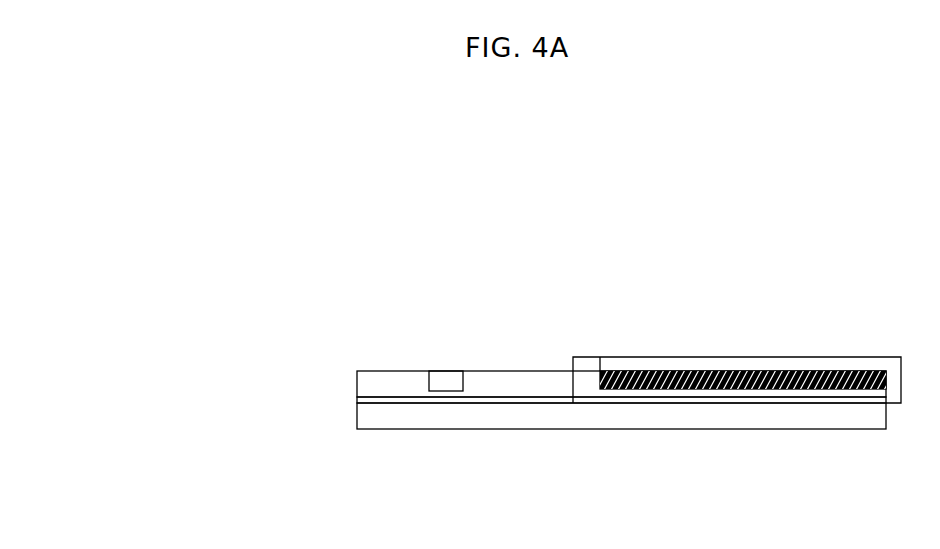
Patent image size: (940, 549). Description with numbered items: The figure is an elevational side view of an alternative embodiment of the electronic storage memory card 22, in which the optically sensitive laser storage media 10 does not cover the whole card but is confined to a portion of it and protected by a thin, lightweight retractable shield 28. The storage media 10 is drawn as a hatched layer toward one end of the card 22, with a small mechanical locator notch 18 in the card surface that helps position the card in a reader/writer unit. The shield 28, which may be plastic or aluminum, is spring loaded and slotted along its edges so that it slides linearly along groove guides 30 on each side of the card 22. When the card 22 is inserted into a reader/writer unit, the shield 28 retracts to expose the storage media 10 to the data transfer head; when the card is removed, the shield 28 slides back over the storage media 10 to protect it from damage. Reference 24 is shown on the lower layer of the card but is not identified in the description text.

The optically sensitive laser storage media 10 is at (748, 388).
The mechanical locator notch 18 is at (440, 380).
The electronic storage memory card 22 is at (300, 401).
The substrate lower layer 24 is at (405, 408).
The retractable shield 28 is at (630, 357).
The groove guides 30 is at (493, 397).